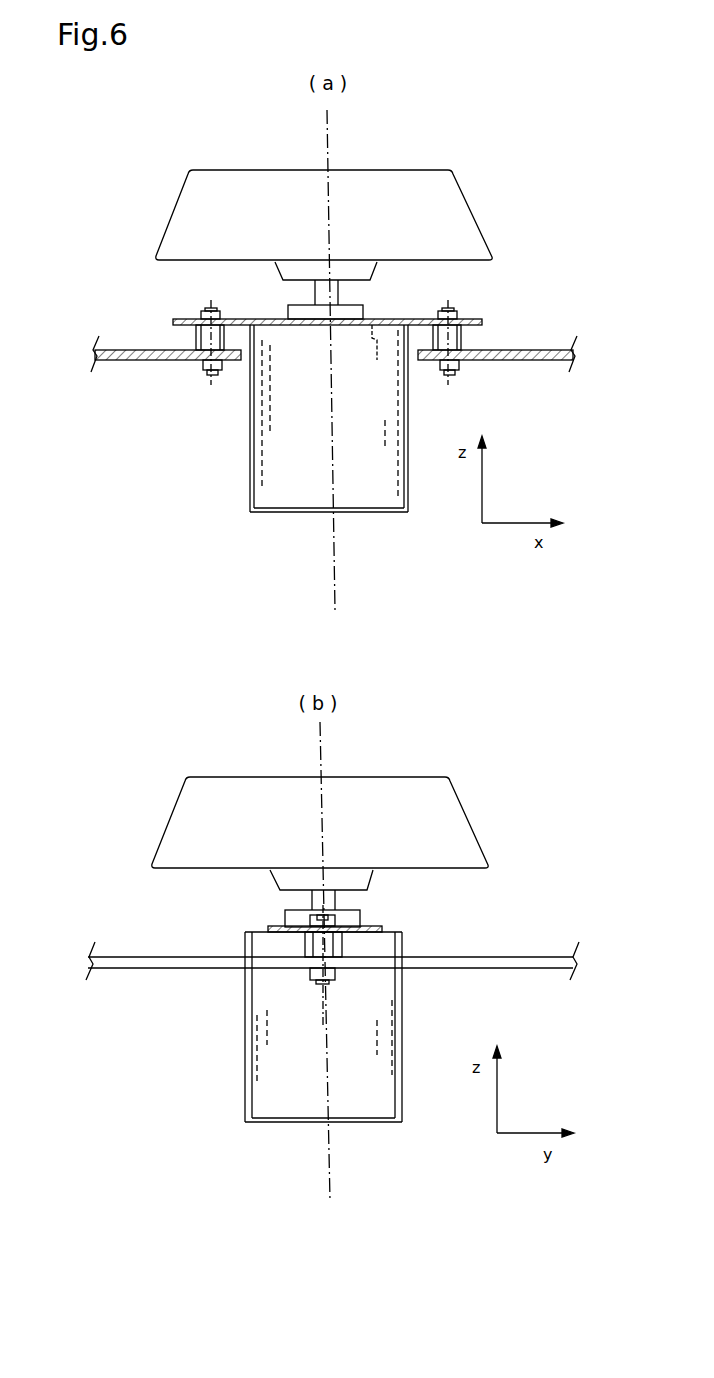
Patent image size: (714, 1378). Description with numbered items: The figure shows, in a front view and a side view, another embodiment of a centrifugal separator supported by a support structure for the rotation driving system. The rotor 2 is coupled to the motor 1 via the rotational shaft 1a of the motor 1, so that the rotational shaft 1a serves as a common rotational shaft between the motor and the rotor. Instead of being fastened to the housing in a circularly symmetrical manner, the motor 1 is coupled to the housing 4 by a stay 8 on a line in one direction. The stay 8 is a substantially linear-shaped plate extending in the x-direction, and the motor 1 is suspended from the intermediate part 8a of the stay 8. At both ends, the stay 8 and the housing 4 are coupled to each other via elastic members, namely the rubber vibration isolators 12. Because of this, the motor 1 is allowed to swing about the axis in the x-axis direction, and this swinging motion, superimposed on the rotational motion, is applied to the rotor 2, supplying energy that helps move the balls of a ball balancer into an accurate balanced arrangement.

The motor 1 is at (288, 403).
The rotational shaft 1a is at (338, 290).
The rotor 2 is at (258, 192).
The housing 4 is at (183, 355).
The stay 8 is at (268, 318).
The intermediate part 8a is at (369, 357).
The rubber vibration isolators 12 is at (195, 340).